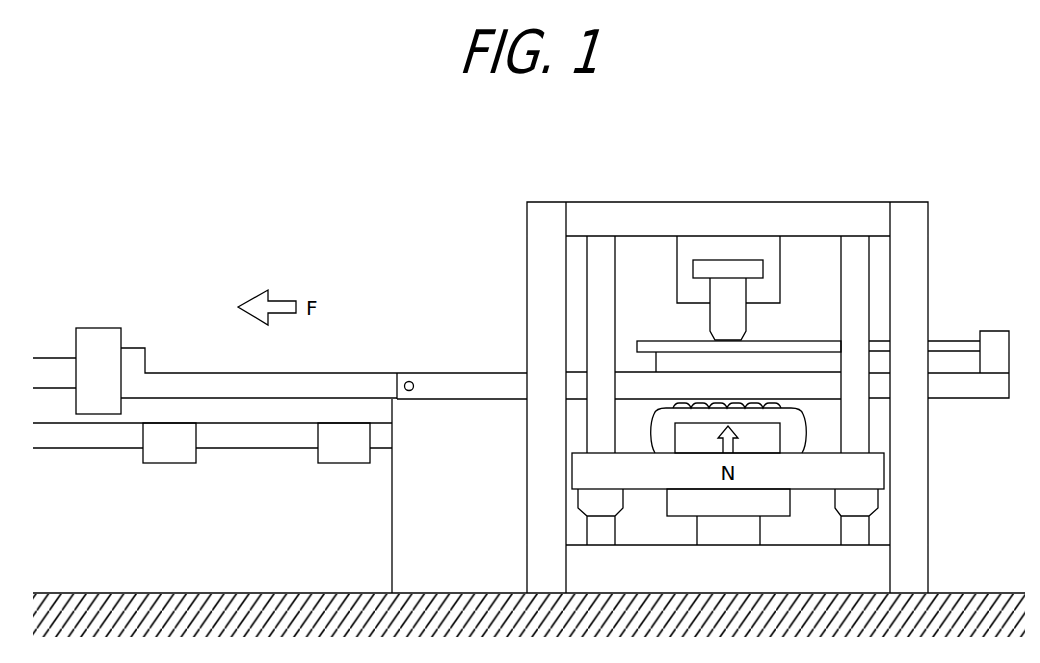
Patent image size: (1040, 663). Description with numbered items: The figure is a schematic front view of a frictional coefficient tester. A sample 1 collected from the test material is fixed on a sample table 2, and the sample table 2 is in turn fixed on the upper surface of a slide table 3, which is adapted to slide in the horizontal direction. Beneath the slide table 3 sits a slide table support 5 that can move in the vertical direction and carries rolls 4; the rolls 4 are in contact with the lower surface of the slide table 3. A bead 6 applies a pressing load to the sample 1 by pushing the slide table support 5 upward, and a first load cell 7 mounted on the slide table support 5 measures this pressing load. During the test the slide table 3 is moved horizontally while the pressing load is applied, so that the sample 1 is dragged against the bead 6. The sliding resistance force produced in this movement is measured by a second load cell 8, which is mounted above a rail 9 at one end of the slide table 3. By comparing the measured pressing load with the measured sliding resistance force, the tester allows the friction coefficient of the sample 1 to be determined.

The sample for measuring friction coefficient 1 is at (796, 341).
The sample table 2 is at (948, 362).
The slide table 3 is at (958, 392).
The roll 4 is at (772, 401).
The slide table support 5 is at (592, 472).
The bead 6 is at (716, 323).
The first load cell 7 is at (778, 512).
The second load cell 8 is at (98, 338).
The rail 9 is at (267, 440).